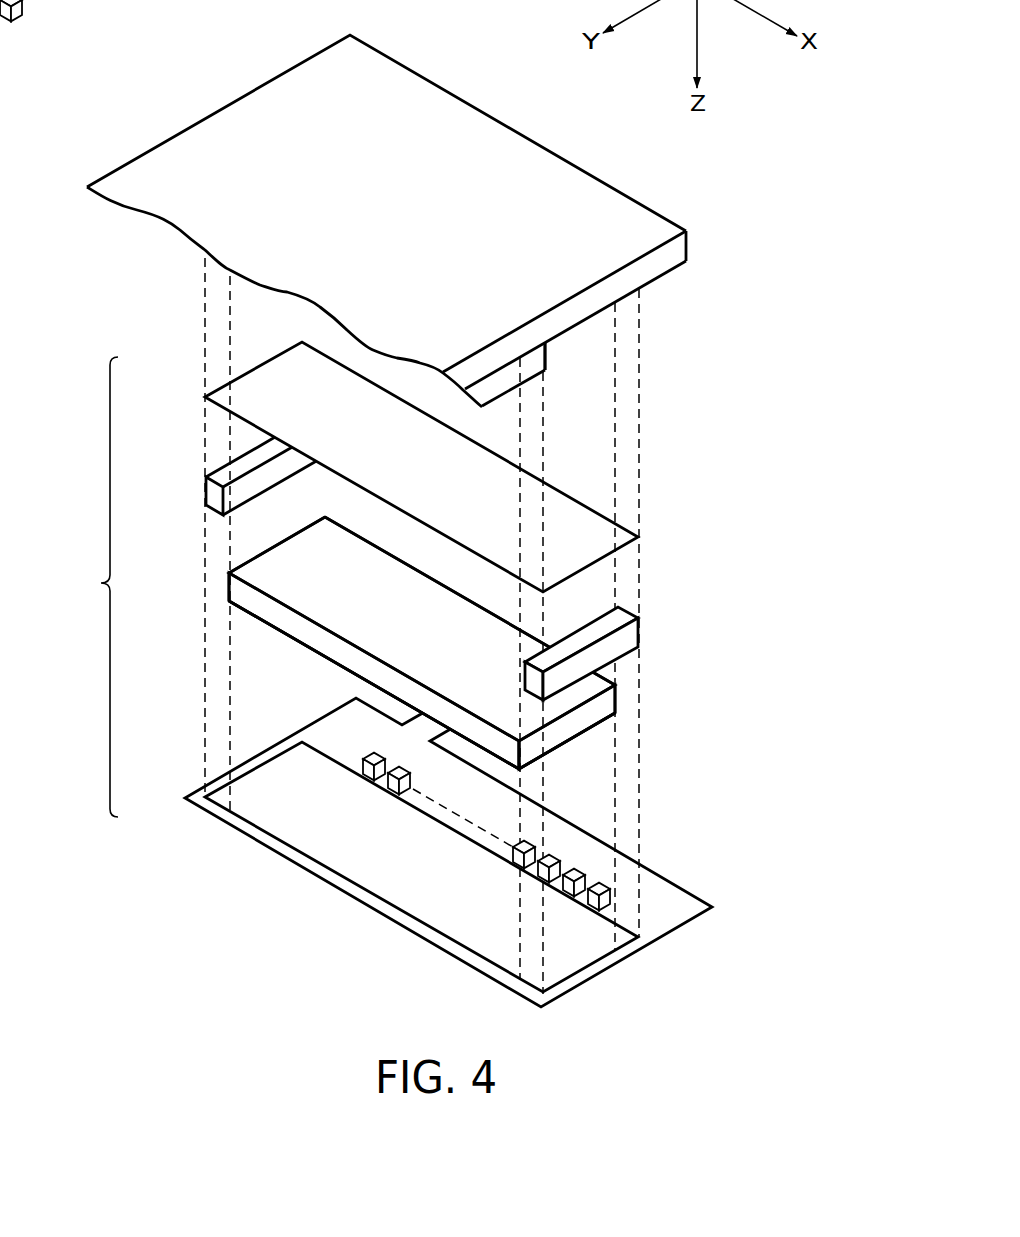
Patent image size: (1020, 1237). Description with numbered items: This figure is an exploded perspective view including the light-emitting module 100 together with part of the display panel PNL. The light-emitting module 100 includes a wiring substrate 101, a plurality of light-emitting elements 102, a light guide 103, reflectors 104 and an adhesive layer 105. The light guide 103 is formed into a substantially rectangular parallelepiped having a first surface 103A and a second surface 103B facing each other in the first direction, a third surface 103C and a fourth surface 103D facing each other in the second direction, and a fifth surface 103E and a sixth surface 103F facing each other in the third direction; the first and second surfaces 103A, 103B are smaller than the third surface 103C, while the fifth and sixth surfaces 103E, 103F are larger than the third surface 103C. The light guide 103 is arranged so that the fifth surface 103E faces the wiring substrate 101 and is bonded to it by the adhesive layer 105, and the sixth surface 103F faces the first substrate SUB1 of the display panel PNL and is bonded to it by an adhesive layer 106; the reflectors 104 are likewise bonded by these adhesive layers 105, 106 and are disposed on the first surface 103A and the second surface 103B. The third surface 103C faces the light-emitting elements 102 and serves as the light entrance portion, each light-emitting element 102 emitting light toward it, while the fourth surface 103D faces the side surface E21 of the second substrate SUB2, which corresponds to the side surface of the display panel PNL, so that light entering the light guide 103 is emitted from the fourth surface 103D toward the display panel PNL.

The display panel PNL is at (173, 137).
The first substrate SUB1 is at (678, 250).
The second substrate SUB2 is at (496, 390).
The side surface E21 is at (552, 357).
The light-emitting module 100 is at (87, 587).
The wiring substrate 101 is at (680, 890).
The light-emitting elements 102 is at (575, 873).
The light guide 103 is at (237, 593).
The first surface 103A is at (270, 538).
The second surface 103B is at (586, 723).
The third surface 103C is at (441, 580).
The fourth surface 103D is at (308, 626).
The fifth surface 103E is at (320, 658).
The sixth surface 103F is at (388, 612).
The reflector 104 is at (216, 497).
The adhesive layer 105 is at (600, 965).
The adhesive layer 106 is at (640, 532).